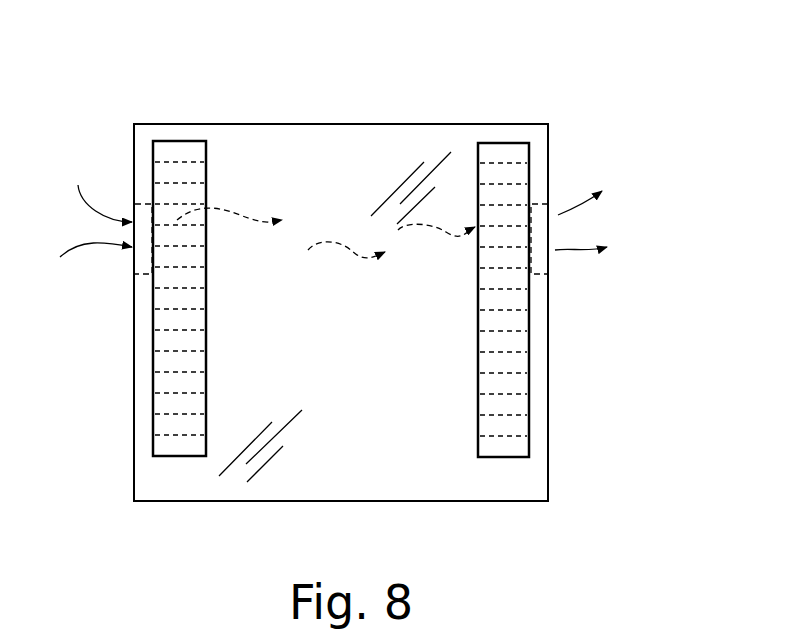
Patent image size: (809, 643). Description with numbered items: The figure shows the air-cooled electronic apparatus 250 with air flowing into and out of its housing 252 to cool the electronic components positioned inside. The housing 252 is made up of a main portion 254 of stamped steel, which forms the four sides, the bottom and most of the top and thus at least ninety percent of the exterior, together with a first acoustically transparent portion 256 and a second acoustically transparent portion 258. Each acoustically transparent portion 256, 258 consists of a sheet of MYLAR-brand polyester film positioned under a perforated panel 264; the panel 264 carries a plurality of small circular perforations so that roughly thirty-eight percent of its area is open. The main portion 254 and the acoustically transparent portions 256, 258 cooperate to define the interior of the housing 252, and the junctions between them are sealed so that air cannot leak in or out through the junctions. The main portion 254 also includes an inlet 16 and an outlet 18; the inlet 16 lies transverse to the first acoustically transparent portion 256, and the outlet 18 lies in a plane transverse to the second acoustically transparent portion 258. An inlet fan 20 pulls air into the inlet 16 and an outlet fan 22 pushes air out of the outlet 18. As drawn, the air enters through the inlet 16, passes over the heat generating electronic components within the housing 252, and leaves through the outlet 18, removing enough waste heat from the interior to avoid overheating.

The air-cooled electronic apparatus 250 is at (622, 98).
The housing 252 is at (582, 464).
The main portion 254 is at (438, 507).
The first acoustically transparent portion 256 is at (208, 317).
The second acoustically transparent portion 258 is at (477, 370).
The perforated panel 264 is at (185, 267).
The inlet 16 is at (118, 272).
The outlet 18 is at (563, 263).
The inlet fan 20 is at (145, 198).
The outlet fan 22 is at (552, 210).